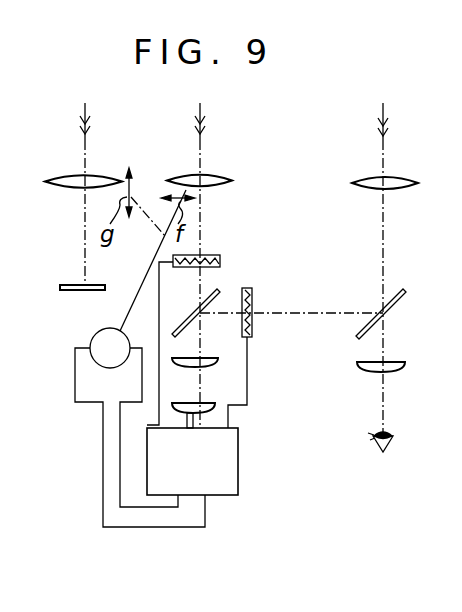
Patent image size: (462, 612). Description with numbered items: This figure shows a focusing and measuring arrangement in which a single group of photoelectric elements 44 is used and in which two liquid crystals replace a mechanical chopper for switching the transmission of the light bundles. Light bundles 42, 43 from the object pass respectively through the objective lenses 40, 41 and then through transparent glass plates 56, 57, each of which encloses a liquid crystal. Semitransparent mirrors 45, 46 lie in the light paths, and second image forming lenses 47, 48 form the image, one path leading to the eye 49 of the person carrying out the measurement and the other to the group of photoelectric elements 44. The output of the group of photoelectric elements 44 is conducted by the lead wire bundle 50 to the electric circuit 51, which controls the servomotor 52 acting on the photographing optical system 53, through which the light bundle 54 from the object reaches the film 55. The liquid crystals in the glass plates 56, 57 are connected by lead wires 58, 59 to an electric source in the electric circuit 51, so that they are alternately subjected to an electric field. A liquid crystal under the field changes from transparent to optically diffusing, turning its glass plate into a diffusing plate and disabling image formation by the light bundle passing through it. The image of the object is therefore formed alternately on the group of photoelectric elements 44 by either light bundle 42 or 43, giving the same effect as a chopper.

The objective lens 40 is at (395, 180).
The objective lens 41 is at (212, 175).
The light bundle 42 is at (385, 120).
The light bundle 43 is at (202, 108).
The group of photoelectric elements 44 is at (205, 403).
The semitransparent mirror 45 is at (395, 298).
The semitransparent mirror 46 is at (212, 290).
The second image forming lens 47 is at (392, 371).
The second image forming lens 48 is at (208, 358).
The eye of the person 49 is at (387, 445).
The lead wire bundle 50 is at (194, 420).
The electric circuit 51 is at (196, 482).
The servomotor 52 is at (97, 335).
The photographing optical system 53 is at (95, 175).
The light bundle from the object 54 is at (87, 110).
The film 55 is at (75, 283).
The transparent glass plate 56 is at (252, 291).
The transparent glass plate 57 is at (208, 255).
The lead wire 58 is at (247, 368).
The lead wire 59 is at (160, 310).